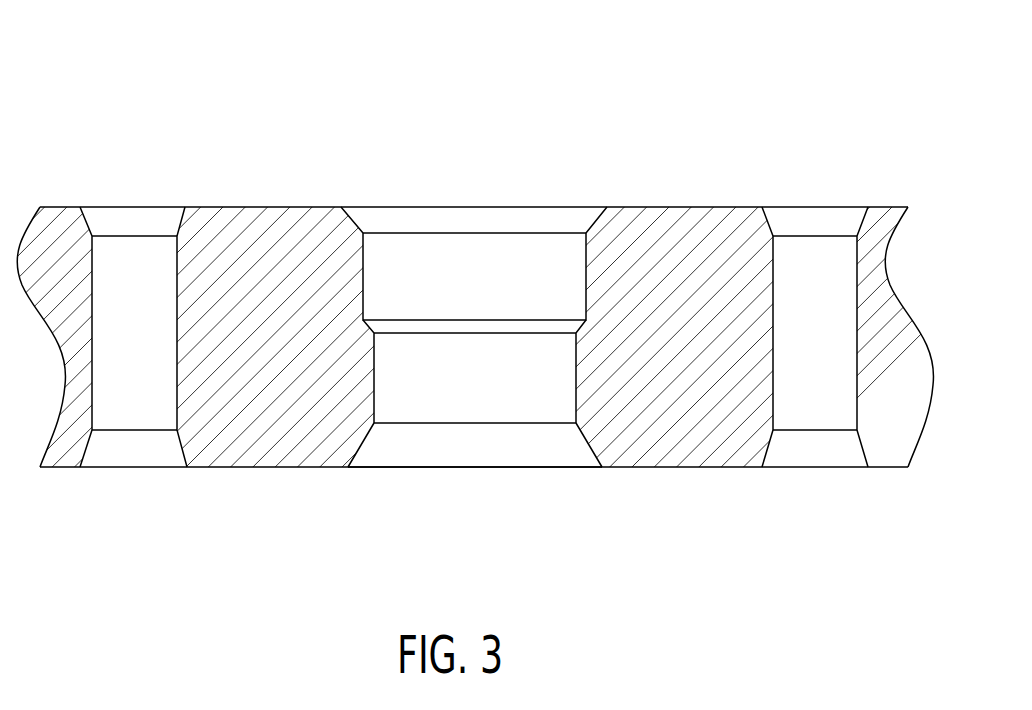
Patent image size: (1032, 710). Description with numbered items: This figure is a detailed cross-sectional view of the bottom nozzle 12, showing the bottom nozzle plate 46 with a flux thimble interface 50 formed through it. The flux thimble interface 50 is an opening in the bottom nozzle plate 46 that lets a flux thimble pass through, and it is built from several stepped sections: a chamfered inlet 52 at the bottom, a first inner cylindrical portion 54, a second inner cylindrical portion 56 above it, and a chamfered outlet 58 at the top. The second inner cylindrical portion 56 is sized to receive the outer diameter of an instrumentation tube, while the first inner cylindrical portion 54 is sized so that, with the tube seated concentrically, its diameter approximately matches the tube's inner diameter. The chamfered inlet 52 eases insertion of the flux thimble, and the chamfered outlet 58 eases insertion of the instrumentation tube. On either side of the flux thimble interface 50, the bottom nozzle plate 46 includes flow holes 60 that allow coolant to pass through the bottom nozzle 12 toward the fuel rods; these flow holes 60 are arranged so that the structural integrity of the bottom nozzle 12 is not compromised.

The bottom nozzle 12 is at (790, 103).
The bottom nozzle plate 46 is at (277, 207).
The chamfered outlet 58 is at (355, 230).
The second inner cylindrical portion 56 is at (363, 278).
The first inner cylindrical portion 54 is at (374, 360).
The chamfered inlet 52 is at (360, 443).
The flux thimble interface 50 is at (535, 469).
The flow holes 60 is at (130, 471).